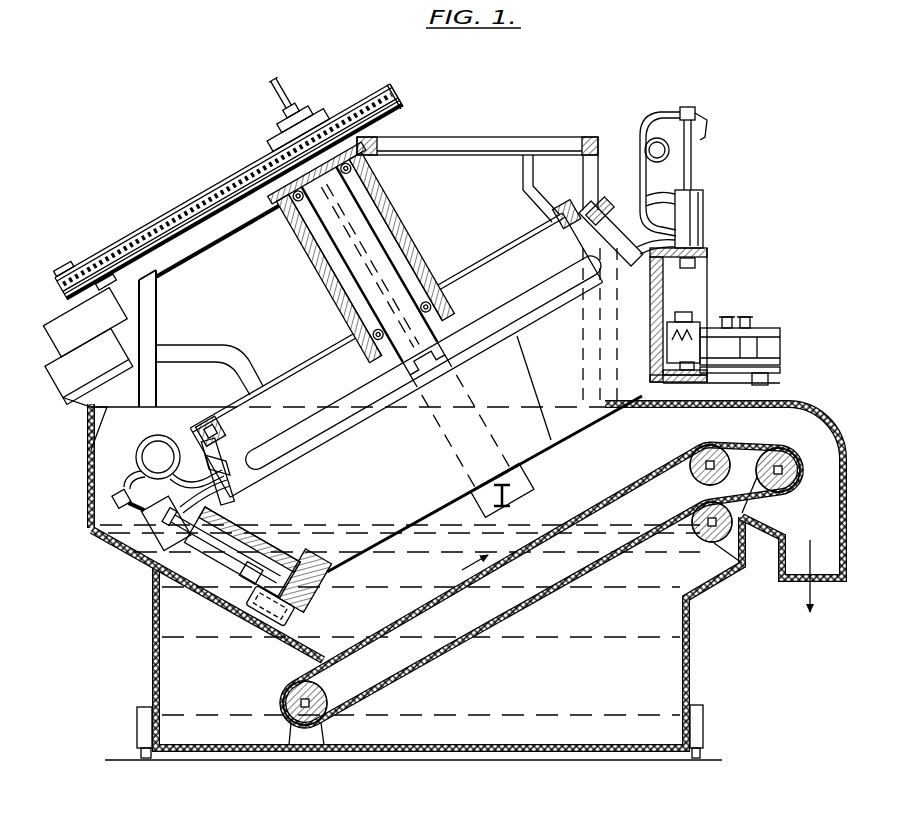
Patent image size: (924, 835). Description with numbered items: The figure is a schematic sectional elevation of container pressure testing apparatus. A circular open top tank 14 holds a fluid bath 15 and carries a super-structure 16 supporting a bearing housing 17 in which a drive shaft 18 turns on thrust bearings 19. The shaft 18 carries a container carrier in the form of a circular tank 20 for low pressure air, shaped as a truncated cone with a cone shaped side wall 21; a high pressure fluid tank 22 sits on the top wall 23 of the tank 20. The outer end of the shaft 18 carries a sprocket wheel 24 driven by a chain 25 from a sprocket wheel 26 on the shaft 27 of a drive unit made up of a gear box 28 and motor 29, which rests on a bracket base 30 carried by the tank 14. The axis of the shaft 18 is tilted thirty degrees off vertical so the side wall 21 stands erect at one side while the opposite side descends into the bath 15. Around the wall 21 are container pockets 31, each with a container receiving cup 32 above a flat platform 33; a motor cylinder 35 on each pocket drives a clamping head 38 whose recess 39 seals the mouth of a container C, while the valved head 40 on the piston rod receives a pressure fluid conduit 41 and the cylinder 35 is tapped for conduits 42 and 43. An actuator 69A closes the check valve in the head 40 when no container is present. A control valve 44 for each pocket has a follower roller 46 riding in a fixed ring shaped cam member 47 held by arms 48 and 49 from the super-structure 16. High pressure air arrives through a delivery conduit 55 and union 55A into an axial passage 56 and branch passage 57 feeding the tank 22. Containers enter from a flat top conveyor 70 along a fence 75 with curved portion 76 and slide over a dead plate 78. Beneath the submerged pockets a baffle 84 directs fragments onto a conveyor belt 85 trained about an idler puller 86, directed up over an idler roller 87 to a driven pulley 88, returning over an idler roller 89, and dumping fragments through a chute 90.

The tank 14 is at (140, 671).
The fluid bath 15 is at (515, 680).
The super-structure 16 is at (486, 130).
The bearing housing 17 is at (393, 205).
The drive shaft 18 is at (312, 106).
The thrust bearings 19 is at (297, 201).
The circular tank 20 is at (551, 440).
The cone shaped side wall 21 is at (290, 537).
The high pressure fluid tank 22 is at (522, 298).
The top wall 23 is at (310, 452).
The sprocket wheel 24 is at (393, 86).
The chain 25 is at (167, 211).
The sprocket wheel 26 is at (97, 272).
The shaft 27 is at (62, 265).
The gear box 28 is at (100, 318).
The motor 29 is at (58, 390).
The bracket base 30 is at (76, 435).
The container pockets 31 is at (275, 523).
The container receiving cup 32 is at (322, 556).
The flat platform 33 is at (310, 600).
The motor cylinder 35 is at (704, 212).
The container clamping head 38 is at (697, 263).
The recess 39 is at (692, 176).
The valved head 40 is at (688, 106).
The pressure fluid conduit 41 is at (651, 123).
The pressure fluid conduit 42 is at (655, 208).
The pressure fluid conduit 43 is at (235, 490).
The control valve 44 is at (203, 454).
The follower roller 46 is at (208, 420).
The cam member 47 is at (300, 363).
The arm 48 is at (525, 192).
The arm 49 is at (178, 346).
The final delivery conduit 55 is at (272, 79).
The union 55A is at (292, 104).
The passage 56 is at (322, 262).
The branch passage 57 is at (448, 363).
The actuator 69A is at (710, 130).
The flat top conveyor 70 is at (782, 372).
The fence 75 is at (785, 335).
The curved portion 76 is at (665, 358).
The dead plate 78 is at (718, 386).
The container fragment directing baffle 84 is at (287, 641).
The conveyor belt 85 is at (478, 596).
The idler puller 86 is at (325, 700).
The idler roller 87 is at (692, 478).
The driven pulley 88 is at (782, 492).
The idler roller 89 is at (705, 541).
The chute 90 is at (800, 580).
The container C is at (692, 316).